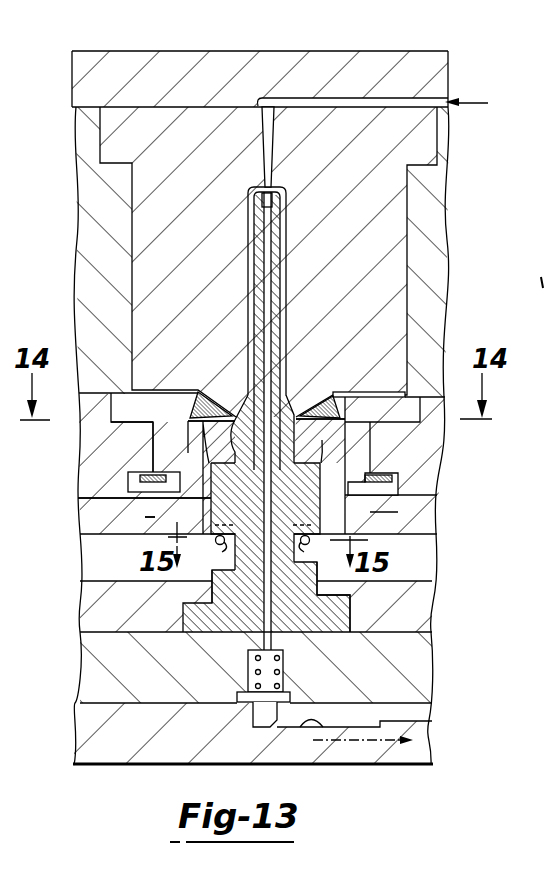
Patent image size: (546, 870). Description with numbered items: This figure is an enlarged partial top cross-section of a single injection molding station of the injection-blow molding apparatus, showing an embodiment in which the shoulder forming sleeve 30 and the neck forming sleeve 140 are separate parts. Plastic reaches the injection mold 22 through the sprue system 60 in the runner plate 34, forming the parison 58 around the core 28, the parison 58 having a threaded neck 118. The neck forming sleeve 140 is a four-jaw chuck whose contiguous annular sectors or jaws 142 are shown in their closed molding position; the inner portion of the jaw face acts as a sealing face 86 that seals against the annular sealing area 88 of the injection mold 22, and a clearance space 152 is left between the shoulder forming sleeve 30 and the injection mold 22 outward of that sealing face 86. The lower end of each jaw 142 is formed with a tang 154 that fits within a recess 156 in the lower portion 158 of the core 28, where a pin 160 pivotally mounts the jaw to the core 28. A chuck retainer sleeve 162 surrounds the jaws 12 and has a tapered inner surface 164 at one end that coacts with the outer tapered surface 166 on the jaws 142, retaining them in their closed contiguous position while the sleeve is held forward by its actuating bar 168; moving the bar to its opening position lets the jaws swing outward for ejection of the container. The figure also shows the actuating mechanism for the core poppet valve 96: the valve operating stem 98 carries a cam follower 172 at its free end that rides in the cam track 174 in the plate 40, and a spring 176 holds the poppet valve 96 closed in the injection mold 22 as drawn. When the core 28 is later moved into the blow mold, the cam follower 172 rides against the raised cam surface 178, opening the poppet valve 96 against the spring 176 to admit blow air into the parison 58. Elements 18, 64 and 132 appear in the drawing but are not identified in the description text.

The jaws 12 is at (447, 225).
The lower housing 18 is at (433, 488).
The injection mold 22 is at (422, 143).
The core 28 is at (258, 222).
The shoulder forming sleeve 30 is at (367, 456).
The runner plate 34 is at (443, 77).
The ways 40 is at (422, 748).
The parison 58 is at (286, 284).
The sprue system 60 is at (350, 97).
The support plate 64 is at (420, 612).
The sealing face 86 is at (218, 417).
The annular sealing area 88 is at (303, 427).
The core poppet valve 96 is at (272, 185).
The valve operating stem 98 is at (273, 232).
The threaded neck 118 is at (370, 397).
The mounting block 132 is at (417, 671).
The neck forming sleeve 140 is at (185, 458).
The annular sectors or jaws 142 is at (125, 500).
The clearance space 152 is at (320, 420).
The tang 154 is at (218, 545).
The recess 156 is at (212, 570).
The lower portion of the core 158 is at (320, 580).
The pin 160 is at (203, 630).
The chuck retainer sleeve 162 is at (133, 527).
The tapered inner surface 164 is at (217, 414).
The outer tapered surface 166 is at (205, 430).
The actuating bar 168 is at (105, 524).
The cam follower 172 is at (263, 717).
The cam track 174 is at (295, 731).
The spring 176 is at (255, 670).
The raised cam surface 178 is at (410, 723).